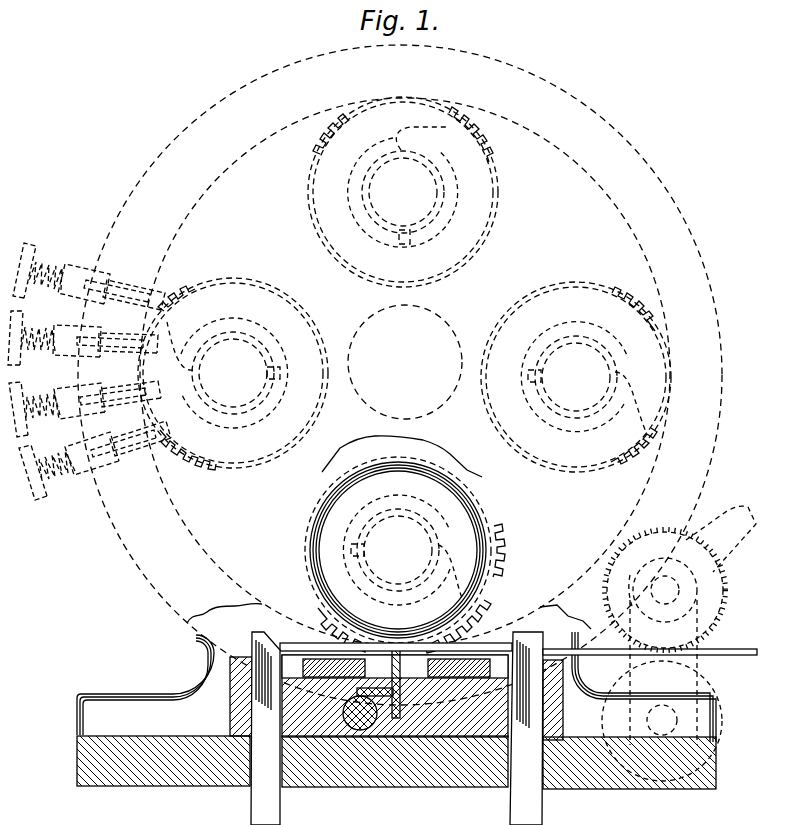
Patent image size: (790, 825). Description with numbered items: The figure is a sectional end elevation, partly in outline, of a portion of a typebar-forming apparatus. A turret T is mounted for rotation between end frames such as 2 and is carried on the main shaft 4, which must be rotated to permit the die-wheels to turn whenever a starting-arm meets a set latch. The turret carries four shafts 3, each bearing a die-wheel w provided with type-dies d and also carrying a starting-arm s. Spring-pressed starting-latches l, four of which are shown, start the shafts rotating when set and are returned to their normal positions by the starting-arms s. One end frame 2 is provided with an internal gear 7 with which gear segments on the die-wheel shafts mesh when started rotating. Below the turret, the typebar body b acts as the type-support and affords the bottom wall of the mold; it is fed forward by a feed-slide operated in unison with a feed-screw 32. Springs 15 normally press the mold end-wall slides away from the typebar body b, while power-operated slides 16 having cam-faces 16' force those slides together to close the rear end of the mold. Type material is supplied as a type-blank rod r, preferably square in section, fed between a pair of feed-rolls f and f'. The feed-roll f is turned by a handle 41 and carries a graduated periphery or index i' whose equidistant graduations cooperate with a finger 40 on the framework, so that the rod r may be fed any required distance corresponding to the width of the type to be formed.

The turret T is at (400, 375).
The shaft 3 is at (366, 200).
The main shaft 4 is at (397, 376).
The type-die d is at (233, 280).
The internal gear 7 is at (478, 632).
The die-wheel w is at (183, 287).
The starting-arm s is at (440, 133).
The starting-latch l is at (89, 371).
The end frame 2 is at (719, 712).
The typebar body b is at (401, 698).
The feed-screw 32 is at (360, 725).
The cam-face 16' is at (373, 632).
The slide 16 is at (397, 728).
The spring 15 is at (313, 651).
The type-blank rod r is at (654, 640).
The feed-roll f is at (680, 590).
The index i' is at (667, 546).
The finger 40 is at (632, 592).
The handle 41 is at (727, 512).
The feed-roll f' is at (674, 690).